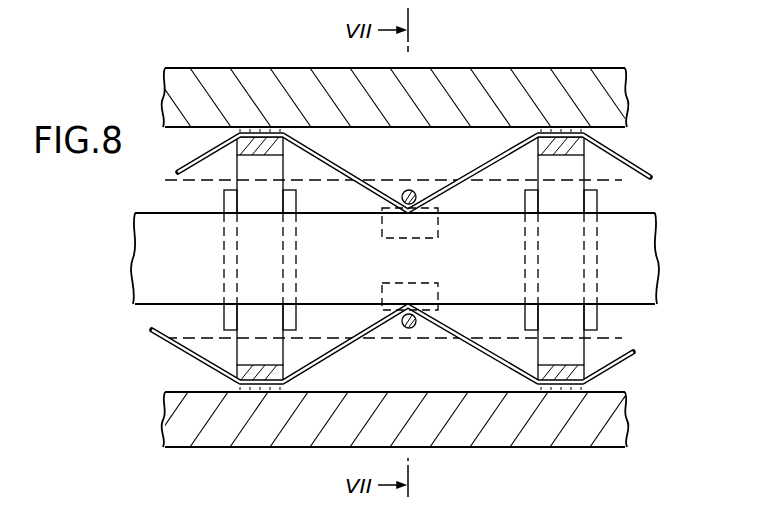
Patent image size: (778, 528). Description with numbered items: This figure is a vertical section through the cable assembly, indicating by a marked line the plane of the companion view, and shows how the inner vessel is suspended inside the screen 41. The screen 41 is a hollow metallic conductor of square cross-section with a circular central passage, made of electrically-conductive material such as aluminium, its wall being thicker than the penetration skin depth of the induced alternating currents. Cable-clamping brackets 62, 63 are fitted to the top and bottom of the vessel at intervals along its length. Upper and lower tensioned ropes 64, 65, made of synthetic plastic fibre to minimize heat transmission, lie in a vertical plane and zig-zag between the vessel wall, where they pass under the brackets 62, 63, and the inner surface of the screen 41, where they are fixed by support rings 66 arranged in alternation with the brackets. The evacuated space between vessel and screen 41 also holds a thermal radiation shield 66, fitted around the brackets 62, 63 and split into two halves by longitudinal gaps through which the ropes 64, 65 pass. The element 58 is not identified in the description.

The screen 41 is at (567, 68).
The lower bolt support 58 is at (231, 380).
The cable-clamping bracket 62 is at (411, 189).
The cable-clamping bracket 63 is at (432, 283).
The upper tensioned rope 64 is at (336, 170).
The lower tensioned rope 65 is at (470, 351).
The support ring 66 is at (165, 181).